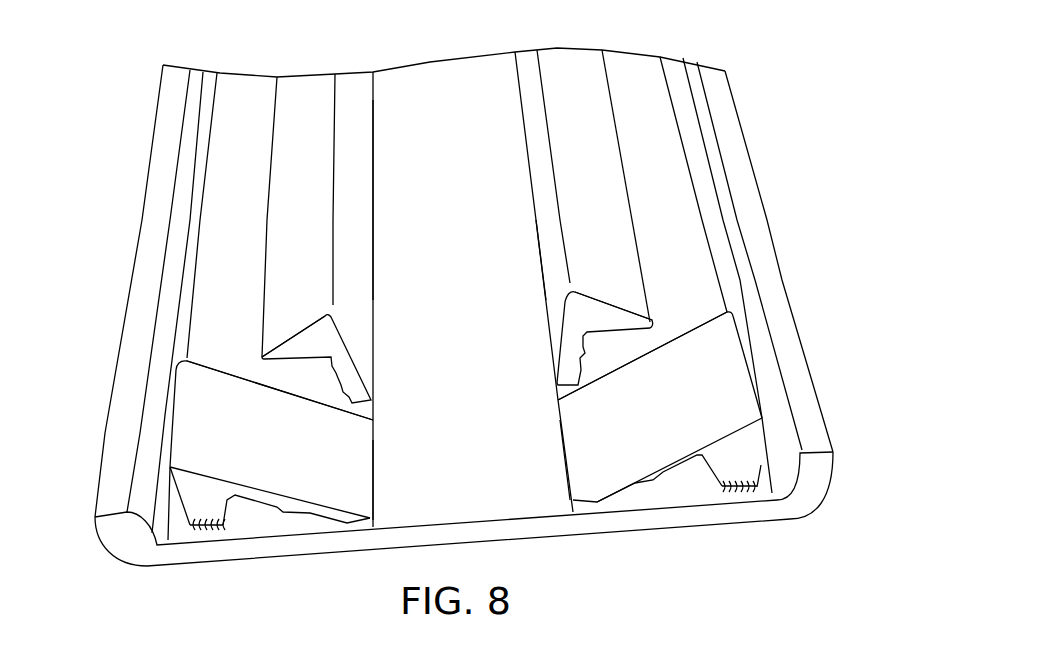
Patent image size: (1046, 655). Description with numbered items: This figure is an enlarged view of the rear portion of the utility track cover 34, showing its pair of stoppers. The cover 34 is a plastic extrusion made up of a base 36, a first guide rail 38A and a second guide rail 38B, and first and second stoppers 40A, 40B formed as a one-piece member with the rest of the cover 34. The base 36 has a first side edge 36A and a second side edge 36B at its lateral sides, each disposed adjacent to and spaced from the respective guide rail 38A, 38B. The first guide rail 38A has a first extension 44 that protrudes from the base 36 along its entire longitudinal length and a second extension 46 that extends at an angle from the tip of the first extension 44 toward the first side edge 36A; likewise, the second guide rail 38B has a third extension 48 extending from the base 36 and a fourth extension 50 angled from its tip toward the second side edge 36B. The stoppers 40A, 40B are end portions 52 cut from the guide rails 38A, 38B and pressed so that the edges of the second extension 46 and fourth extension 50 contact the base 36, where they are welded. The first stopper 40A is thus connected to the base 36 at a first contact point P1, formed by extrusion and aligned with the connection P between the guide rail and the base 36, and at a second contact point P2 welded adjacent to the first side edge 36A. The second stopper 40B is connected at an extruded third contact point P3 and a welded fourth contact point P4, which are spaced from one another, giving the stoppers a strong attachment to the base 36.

The utility track cover 34 is at (699, 30).
The base 36 is at (443, 96).
The first side edge 36A is at (120, 455).
The second side edge 36B is at (805, 407).
The first guide rail 38A is at (301, 91).
The second guide rail 38B is at (568, 63).
The first stopper 40A is at (299, 471).
The second stopper 40B is at (650, 437).
The first extension 44 is at (347, 333).
The second extension 46 is at (298, 330).
The third extension 48 is at (563, 318).
The fourth extension 50 is at (602, 300).
The end portions 52 is at (313, 443).
The contact point P is at (373, 217).
The first contact point P1 is at (375, 480).
The second contact point P2 is at (207, 532).
The third contact point P3 is at (567, 468).
The fourth contact point P4 is at (745, 492).